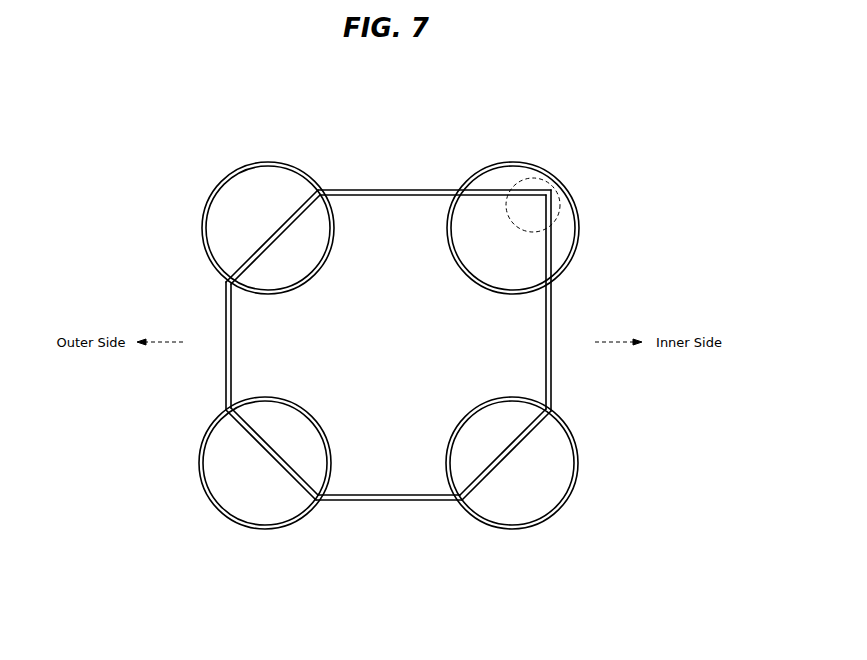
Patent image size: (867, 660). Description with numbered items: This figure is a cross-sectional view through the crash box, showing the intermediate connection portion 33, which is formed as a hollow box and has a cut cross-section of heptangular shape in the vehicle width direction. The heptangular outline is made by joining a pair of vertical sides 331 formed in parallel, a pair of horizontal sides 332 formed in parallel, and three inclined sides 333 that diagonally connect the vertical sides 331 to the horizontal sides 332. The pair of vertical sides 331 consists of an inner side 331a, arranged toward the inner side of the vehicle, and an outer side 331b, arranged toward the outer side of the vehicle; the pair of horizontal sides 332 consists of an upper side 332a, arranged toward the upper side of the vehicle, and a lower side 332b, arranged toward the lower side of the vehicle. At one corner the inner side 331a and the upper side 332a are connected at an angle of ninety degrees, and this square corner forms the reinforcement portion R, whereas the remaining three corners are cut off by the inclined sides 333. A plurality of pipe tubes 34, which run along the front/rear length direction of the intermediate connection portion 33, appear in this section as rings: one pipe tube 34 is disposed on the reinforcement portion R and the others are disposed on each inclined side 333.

The intermediate connection portion 33 is at (387, 361).
The pipe tube 34 is at (240, 168).
The vertical side 331 is at (388, 500).
The inner side 331a is at (546, 386).
The outer side 331b is at (230, 382).
The horizontal side 332 is at (434, 300).
The upper side 332a is at (417, 188).
The lower side 332b is at (352, 496).
The inclined side 333 is at (265, 233).
The reinforcement portion R is at (578, 223).